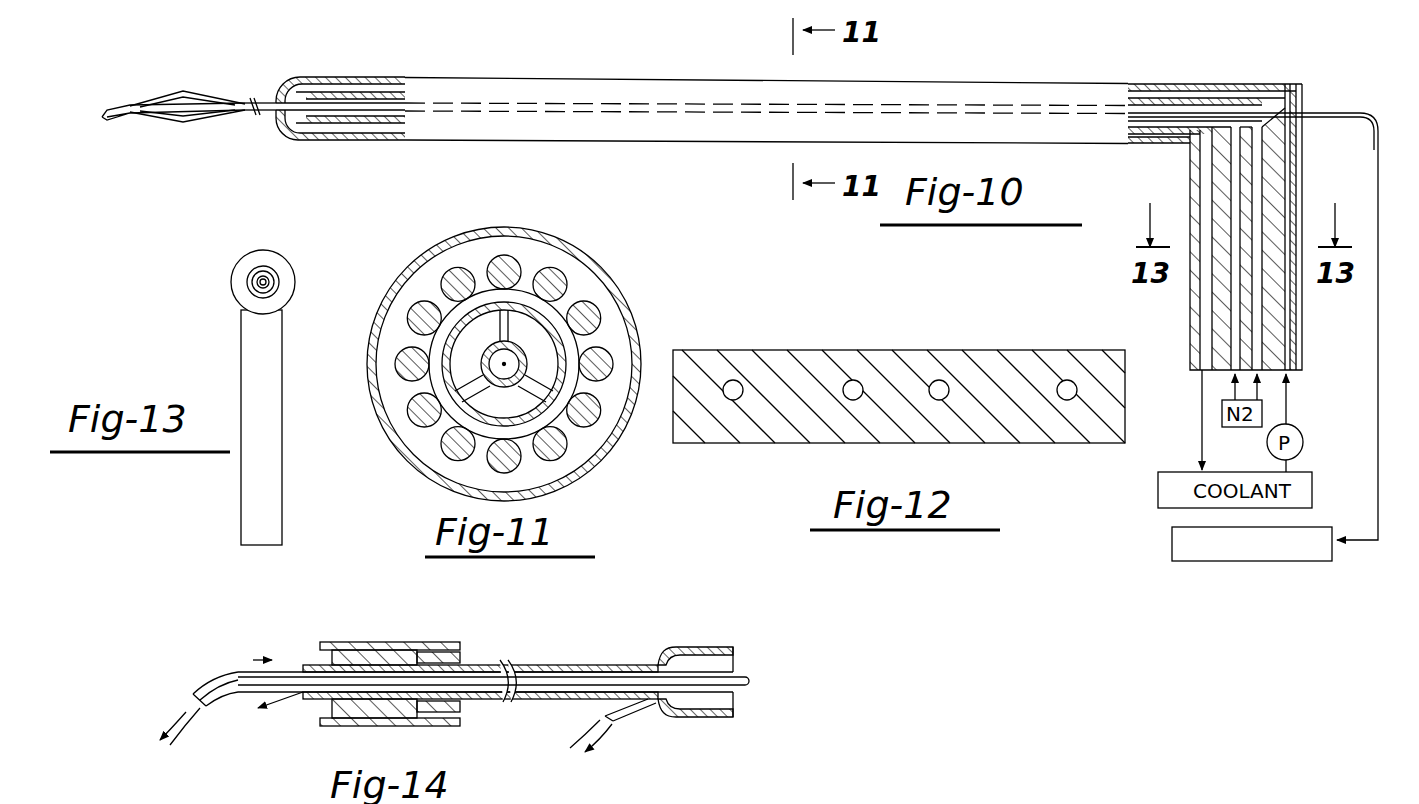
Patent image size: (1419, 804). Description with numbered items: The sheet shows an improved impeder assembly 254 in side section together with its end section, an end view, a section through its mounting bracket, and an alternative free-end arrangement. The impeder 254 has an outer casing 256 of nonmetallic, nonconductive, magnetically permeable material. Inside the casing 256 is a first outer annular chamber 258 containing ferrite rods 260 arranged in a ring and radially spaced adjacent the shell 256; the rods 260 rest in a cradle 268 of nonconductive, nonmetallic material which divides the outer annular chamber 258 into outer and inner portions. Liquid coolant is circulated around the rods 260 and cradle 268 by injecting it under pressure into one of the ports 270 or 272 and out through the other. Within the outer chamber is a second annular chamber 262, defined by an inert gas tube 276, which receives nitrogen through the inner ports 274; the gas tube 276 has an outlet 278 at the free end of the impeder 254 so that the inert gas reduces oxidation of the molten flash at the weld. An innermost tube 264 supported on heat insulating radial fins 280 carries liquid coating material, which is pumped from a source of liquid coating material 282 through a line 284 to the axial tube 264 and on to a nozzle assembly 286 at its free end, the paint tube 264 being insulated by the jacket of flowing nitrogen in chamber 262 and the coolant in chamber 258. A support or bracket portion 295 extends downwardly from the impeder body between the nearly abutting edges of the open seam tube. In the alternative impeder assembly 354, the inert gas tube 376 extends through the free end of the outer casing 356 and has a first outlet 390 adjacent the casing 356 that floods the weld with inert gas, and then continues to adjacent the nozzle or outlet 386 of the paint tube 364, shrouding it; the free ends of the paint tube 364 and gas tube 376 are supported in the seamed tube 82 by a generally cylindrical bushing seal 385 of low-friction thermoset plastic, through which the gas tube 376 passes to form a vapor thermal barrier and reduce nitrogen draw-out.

In FIG. 14, the seamed tube 82 is at (370, 642).
In FIG. 10, the impeder assembly 254 is at (626, 70).
In FIG. 10, the outer casing 256 is at (440, 77).
In FIG. 11, the outer casing 256 is at (478, 235).
In FIG. 13, the outer casing 256 is at (250, 262).
In FIG. 11, the first outer annular chamber 258 is at (425, 290).
In FIG. 11, the ferrite rods 260 is at (585, 318).
In FIG. 11, the second annular chamber 262 is at (470, 355).
In FIG. 11, the innermost tube 264 is at (425, 380).
In FIG. 11, the cradle 268 is at (425, 430).
In FIG. 10, the port 270 is at (1205, 350).
In FIG. 12, the port 270 is at (733, 380).
In FIG. 10, the port 272 is at (1290, 330).
In FIG. 12, the port 272 is at (1067, 380).
In FIG. 10, the inner ports 274 is at (1257, 200).
In FIG. 12, the inner ports 274 is at (939, 380).
In FIG. 10, the inert gas tube 276 is at (300, 128).
In FIG. 11, the inert gas tube 276 is at (540, 245).
In FIG. 10, the outlet 278 is at (270, 100).
In FIG. 11, the radial fins 280 is at (578, 405).
In FIG. 10, the source of liquid coating material 282 is at (1252, 563).
In FIG. 10, the line 284 is at (1372, 131).
In FIG. 10, the nozzle assembly 286 is at (113, 105).
In FIG. 13, the nozzle assembly 286 is at (262, 280).
In FIG. 10, the support or bracket portion 295 is at (1195, 328).
In FIG. 12, the support or bracket portion 295 is at (899, 396).
In FIG. 13, the support or bracket portion 295 is at (260, 510).
In FIG. 14, the impeder assembly 354 is at (700, 645).
In FIG. 14, the outer casing 356 is at (705, 717).
In FIG. 14, the paint tube 364 is at (297, 671).
In FIG. 14, the inert gas tube 376 is at (595, 665).
In FIG. 14, the bushing seal 385 is at (350, 706).
In FIG. 14, the nozzle or outlet 386 is at (212, 678).
In FIG. 14, the first outlet 390 is at (600, 714).